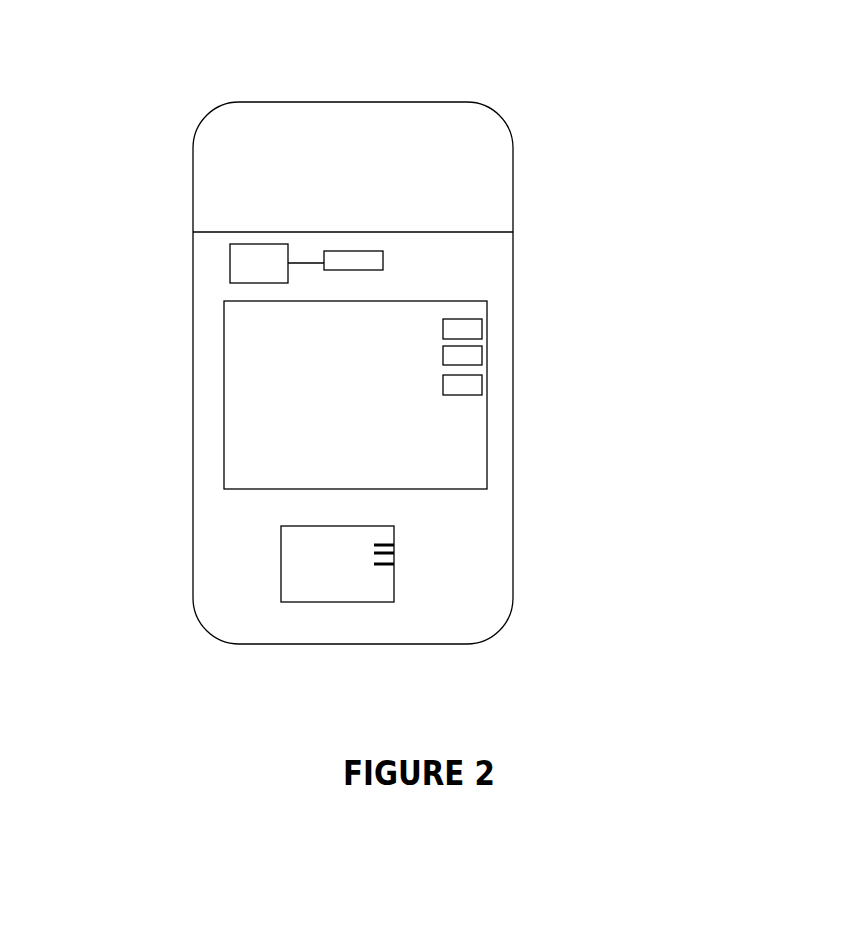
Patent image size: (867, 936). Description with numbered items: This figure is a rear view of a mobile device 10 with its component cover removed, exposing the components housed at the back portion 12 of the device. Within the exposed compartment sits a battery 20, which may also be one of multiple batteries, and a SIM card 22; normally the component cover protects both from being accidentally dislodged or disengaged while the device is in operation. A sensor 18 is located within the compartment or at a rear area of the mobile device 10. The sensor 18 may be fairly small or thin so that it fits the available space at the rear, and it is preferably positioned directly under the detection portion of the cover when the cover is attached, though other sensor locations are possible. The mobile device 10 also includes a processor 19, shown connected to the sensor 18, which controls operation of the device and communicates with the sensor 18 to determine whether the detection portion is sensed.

The mobile device 10 is at (531, 114).
The back portion 12 is at (513, 207).
The sensor 18 is at (383, 264).
The processor 19 is at (230, 283).
The battery 20 is at (455, 470).
The SIM card 22 is at (380, 582).